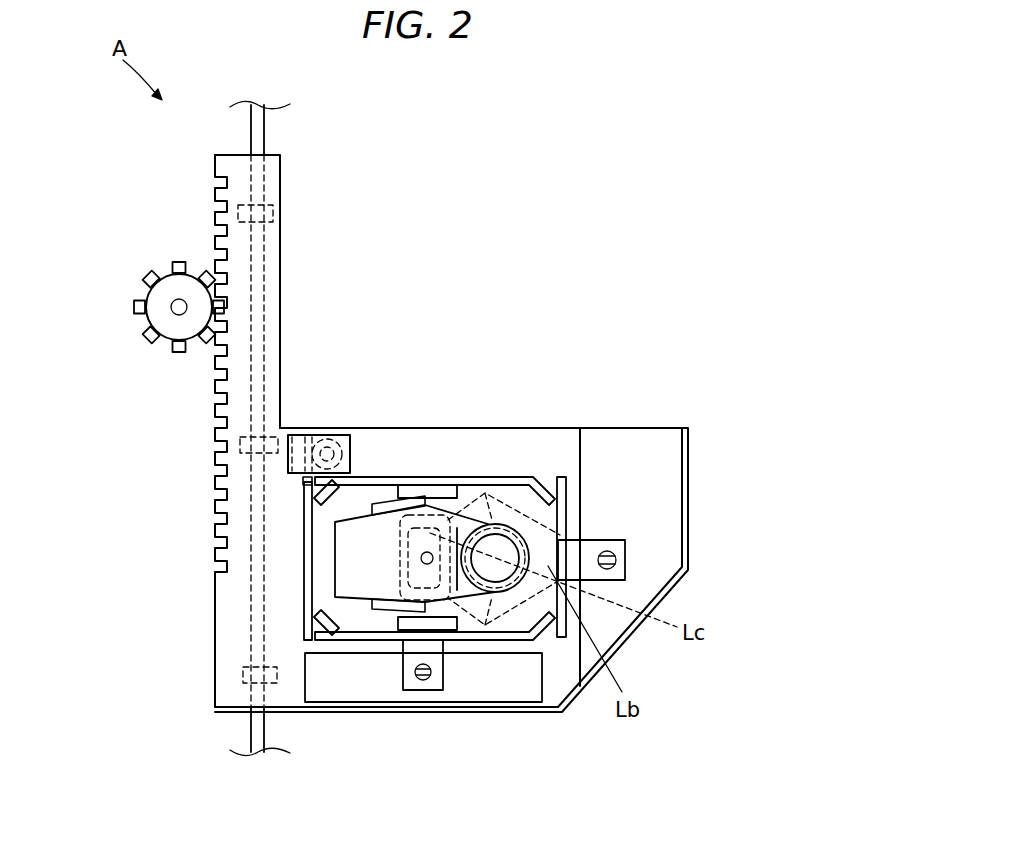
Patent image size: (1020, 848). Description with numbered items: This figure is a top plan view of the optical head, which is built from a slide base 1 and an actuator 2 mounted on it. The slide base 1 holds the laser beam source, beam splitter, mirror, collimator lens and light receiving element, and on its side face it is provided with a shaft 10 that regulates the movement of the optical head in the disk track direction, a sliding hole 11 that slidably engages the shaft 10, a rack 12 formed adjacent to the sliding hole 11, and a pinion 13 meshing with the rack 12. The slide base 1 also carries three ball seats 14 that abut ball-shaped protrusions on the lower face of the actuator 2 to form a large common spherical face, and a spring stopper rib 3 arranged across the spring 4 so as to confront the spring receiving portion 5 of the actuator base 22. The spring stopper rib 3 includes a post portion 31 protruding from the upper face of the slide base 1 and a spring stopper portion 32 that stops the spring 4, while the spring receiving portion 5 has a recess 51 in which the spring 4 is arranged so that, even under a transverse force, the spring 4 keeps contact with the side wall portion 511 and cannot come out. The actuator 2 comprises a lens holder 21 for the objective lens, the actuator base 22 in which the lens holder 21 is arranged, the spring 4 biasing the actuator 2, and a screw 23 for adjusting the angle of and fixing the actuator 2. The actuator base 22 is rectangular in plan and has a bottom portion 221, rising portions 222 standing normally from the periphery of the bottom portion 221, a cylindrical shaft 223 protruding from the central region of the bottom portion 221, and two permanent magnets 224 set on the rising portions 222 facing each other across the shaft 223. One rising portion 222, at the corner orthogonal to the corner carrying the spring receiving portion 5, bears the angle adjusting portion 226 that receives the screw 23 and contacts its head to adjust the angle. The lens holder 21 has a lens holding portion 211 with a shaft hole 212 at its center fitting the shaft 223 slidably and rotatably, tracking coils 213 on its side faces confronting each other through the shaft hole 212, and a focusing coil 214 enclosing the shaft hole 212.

The slide base 1 is at (282, 217).
The actuator 2 is at (590, 468).
The spring stopper rib 3 is at (282, 463).
The spring 4 is at (240, 437).
The spring receiving portion 5 is at (329, 426).
The shaft 10 is at (257, 140).
The sliding hole 11 is at (238, 207).
The rack 12 is at (215, 245).
The pinion 13 is at (160, 313).
The ball seats 14 is at (487, 490).
The lens holder 21 is at (441, 557).
The actuator base 22 is at (490, 550).
The screw 23 is at (583, 654).
The post portion 31 is at (303, 474).
The spring stopper portion 32 is at (308, 484).
The recess 51 is at (313, 437).
The side wall portion 511 is at (343, 440).
The lens holding portion 211 is at (497, 573).
The shaft hole 212 is at (437, 612).
The tracking coils 213 is at (403, 490).
The focusing coil 214 is at (400, 562).
The bottom portion 221 is at (525, 508).
The rising portions 222 is at (510, 477).
The cylindrical shaft 223 is at (428, 552).
The permanent magnets 224 is at (447, 495).
The angle adjusting portion 226 is at (617, 544).